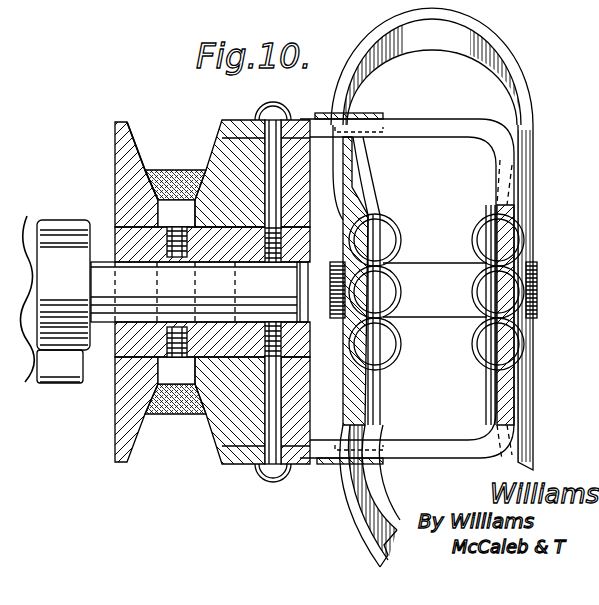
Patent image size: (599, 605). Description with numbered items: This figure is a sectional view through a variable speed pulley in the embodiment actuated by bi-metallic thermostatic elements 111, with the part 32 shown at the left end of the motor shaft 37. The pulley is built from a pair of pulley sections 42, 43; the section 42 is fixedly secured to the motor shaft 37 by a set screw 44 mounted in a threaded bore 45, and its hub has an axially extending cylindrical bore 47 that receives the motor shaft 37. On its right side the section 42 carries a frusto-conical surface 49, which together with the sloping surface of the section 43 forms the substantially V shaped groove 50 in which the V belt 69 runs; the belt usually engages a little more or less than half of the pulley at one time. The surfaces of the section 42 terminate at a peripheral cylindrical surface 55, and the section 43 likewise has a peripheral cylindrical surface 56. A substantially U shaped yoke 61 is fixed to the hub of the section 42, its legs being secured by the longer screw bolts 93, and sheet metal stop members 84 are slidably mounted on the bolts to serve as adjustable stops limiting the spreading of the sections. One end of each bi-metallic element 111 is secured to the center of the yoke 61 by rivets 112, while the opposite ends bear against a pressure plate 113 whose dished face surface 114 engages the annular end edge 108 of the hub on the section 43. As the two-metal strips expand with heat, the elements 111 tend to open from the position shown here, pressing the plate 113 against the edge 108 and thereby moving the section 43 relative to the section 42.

The knob 32 is at (55, 234).
The motor shaft 37 is at (103, 307).
The pulley section 42 is at (129, 166).
The pulley section 43 is at (218, 162).
The set screw 44 is at (157, 246).
The threaded bore 45 is at (176, 213).
The cylindrical bore 47 is at (232, 262).
The frusto-conical surface 49 is at (137, 152).
The V shaped groove 50 is at (176, 370).
The cylindrical surface 55 is at (119, 123).
The cylindrical surface 56 is at (233, 463).
The yoke 61 is at (446, 119).
The V belt 69 is at (175, 415).
The stop member 84 is at (376, 118).
The screw bolt 93 is at (266, 113).
The edge of annular hub 108 is at (315, 420).
The bi-metallic thermostatic element 111 is at (535, 100).
The rivet 112 is at (527, 264).
The pressure plate 113 is at (352, 187).
The face surface 114 is at (362, 212).